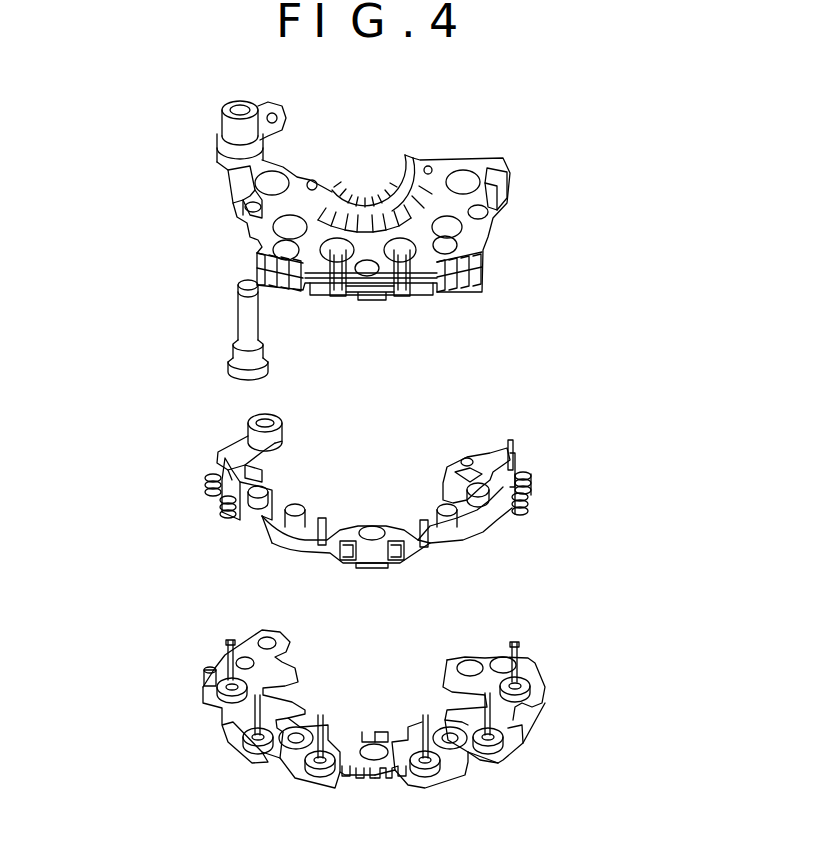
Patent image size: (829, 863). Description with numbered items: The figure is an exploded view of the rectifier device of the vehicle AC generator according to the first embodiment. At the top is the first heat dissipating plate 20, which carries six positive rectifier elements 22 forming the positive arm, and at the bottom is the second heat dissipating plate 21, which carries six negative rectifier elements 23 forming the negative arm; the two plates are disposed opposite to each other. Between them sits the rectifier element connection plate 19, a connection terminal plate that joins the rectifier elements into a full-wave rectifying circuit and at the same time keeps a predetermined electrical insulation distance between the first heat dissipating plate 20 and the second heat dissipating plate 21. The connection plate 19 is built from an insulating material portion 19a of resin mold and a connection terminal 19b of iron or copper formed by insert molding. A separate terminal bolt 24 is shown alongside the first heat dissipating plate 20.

The rectifier element connection plate 19 is at (530, 450).
The insulating material portion 19a is at (443, 482).
The connection terminal 19b is at (530, 487).
The first heat dissipating plate 20 is at (240, 152).
The second heat dissipating plate 21 is at (223, 663).
The positive rectifier element 22 is at (490, 165).
The negative rectifier element 23 is at (547, 668).
The terminal bolt B 24 is at (242, 305).